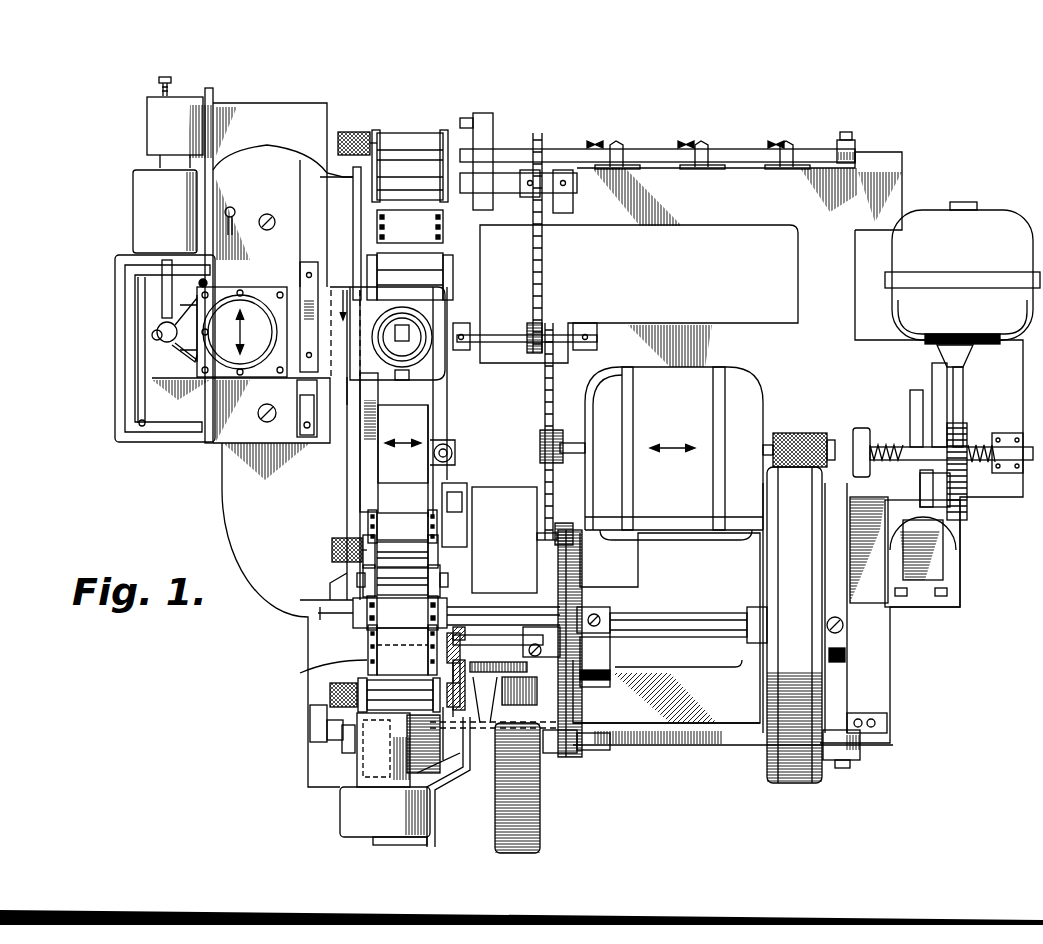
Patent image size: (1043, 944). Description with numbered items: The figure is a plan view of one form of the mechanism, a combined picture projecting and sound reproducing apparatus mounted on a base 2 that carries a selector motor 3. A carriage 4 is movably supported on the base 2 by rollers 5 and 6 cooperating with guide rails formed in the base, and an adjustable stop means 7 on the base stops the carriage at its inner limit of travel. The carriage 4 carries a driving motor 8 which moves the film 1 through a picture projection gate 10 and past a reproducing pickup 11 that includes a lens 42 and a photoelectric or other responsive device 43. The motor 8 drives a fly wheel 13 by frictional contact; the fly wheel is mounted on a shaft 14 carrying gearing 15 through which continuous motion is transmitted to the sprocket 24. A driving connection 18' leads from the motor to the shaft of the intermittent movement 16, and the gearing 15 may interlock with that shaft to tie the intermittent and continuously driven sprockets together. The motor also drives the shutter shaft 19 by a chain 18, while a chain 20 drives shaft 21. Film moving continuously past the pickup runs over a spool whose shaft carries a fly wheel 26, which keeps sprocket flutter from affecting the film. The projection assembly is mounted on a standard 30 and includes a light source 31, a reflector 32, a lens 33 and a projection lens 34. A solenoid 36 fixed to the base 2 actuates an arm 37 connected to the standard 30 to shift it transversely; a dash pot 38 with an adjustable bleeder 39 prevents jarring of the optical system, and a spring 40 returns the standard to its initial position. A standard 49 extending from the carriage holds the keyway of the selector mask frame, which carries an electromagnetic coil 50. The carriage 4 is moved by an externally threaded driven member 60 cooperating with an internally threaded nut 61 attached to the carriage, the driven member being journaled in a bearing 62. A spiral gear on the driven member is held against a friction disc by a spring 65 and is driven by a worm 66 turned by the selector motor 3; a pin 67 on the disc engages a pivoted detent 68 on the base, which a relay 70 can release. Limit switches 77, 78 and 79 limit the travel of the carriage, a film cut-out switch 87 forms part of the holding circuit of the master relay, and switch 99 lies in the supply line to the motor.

The film 1 is at (366, 239).
The base 2 is at (893, 178).
The selector motor 3 is at (984, 224).
The carriage 4 is at (766, 334).
The roller 5 is at (857, 150).
The roller 6 is at (850, 748).
The adjustable stop means 7 is at (885, 718).
The driving motor 8 is at (757, 402).
The picture projection gate 10 is at (424, 422).
The reproducing pickup 11 is at (345, 811).
The fly wheel 13 is at (790, 772).
The shaft 14 is at (692, 622).
The gearing 15 is at (580, 590).
The intermittent movement 16 is at (500, 490).
The chain 18 is at (564, 431).
The driving connection 18' is at (536, 451).
The shutter shaft 19 is at (505, 335).
The chain 20 is at (540, 278).
The shaft 21 is at (505, 175).
The sprocket 24 is at (360, 665).
The fly wheel 26 is at (540, 835).
The standard 30 is at (343, 292).
The light source 31 is at (240, 308).
The reflector 32 is at (185, 355).
The lens 33 is at (300, 300).
The projection lens 34 is at (428, 328).
The solenoid 36 is at (137, 206).
The arm 37 is at (160, 304).
The dash pot 38 is at (157, 126).
The adjustable bleeder 39 is at (160, 80).
The spring 40 is at (240, 225).
The lens 42 is at (342, 740).
The photoelectric device 43 is at (352, 605).
The standard 49 is at (460, 762).
The electromagnetic coil 50 is at (522, 705).
The externally threaded driven member 60 is at (915, 444).
The internally threaded nut 61 is at (860, 428).
The bearing 62 is at (1005, 472).
The spring 65 is at (978, 442).
The worm 66 is at (965, 428).
The pin 67 is at (915, 462).
The pivoted detent 68 is at (935, 400).
The relay 70 is at (950, 565).
The limit switch 77 is at (687, 140).
The limit switch 78 is at (597, 140).
The limit switch 79 is at (782, 140).
The film cut-out switch 87 is at (452, 452).
The switch 99 is at (912, 418).